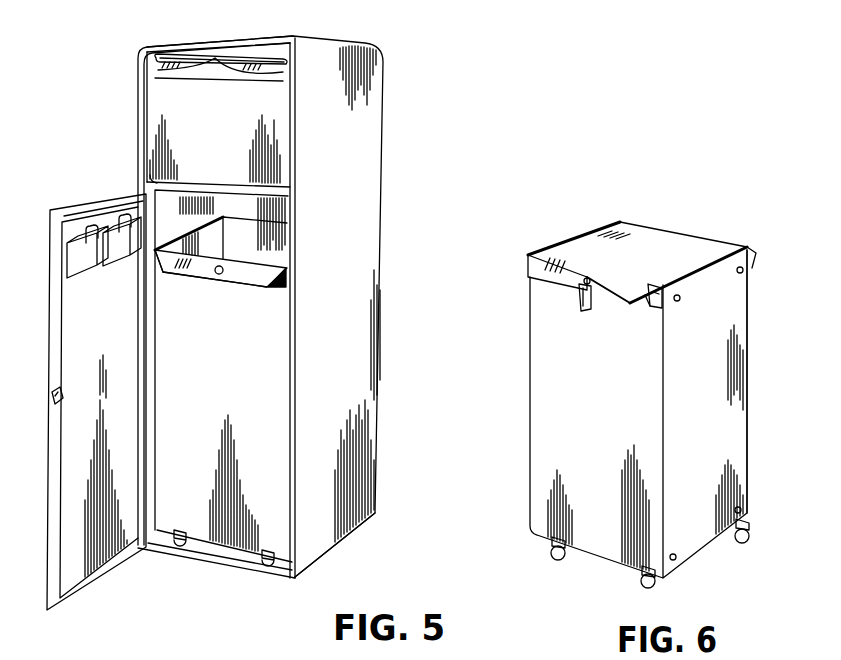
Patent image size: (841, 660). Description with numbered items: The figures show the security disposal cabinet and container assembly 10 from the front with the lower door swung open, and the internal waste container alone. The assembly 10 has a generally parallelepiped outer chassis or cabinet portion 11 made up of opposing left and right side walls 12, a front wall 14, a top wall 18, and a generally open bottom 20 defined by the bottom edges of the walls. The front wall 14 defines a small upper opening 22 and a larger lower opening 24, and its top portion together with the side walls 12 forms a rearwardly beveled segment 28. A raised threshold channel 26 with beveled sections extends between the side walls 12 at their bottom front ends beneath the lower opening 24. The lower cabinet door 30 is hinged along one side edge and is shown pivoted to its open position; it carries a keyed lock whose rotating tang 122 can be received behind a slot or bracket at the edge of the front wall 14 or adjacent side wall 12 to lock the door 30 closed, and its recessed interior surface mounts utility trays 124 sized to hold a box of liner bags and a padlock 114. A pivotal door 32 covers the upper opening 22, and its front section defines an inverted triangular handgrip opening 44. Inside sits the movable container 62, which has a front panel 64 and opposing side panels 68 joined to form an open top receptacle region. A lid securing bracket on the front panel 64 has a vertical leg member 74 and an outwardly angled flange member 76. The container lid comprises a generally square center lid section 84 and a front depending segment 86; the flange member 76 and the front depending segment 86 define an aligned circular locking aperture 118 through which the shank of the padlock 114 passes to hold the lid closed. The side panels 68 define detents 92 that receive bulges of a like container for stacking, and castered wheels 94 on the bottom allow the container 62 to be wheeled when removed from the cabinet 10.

In FIG. 5, the security disposal cabinet and container assembly 10 is at (251, 315).
In FIG. 5, the outer chassis or cabinet portion 11 is at (389, 278).
In FIG. 5, the side walls 12 is at (368, 224).
In FIG. 5, the front wall 14 is at (148, 180).
In FIG. 5, the top wall 18 is at (290, 40).
In FIG. 5, the open bottom 20 is at (358, 538).
In FIG. 5, the upper opening 22 is at (143, 104).
In FIG. 5, the lower opening 24 is at (283, 362).
In FIG. 5, the raised threshold channel 26 is at (215, 568).
In FIG. 5, the rearwardly beveled segment 28 is at (143, 56).
In FIG. 5, the lower cabinet door 30 is at (73, 388).
In FIG. 5, the pivotal door 32 is at (218, 115).
In FIG. 5, the handgrip opening 44 is at (200, 60).
In FIG. 5, the movable container 62 is at (183, 244).
In FIG. 6, the movable container 62 is at (623, 259).
In FIG. 5, the front panel 64 is at (197, 416).
In FIG. 6, the front panel 64 is at (640, 431).
In FIG. 6, the side panels 68 is at (736, 392).
In FIG. 5, the vertical leg member 74 is at (160, 270).
In FIG. 6, the vertical leg member 74 is at (655, 312).
In FIG. 5, the angled flange member 76 is at (205, 278).
In FIG. 6, the angled flange member 76 is at (648, 306).
In FIG. 6, the center lid section 84 is at (652, 238).
In FIG. 6, the front depending segment 86 is at (533, 268).
In FIG. 6, the detents 92 is at (680, 299).
In FIG. 5, the castered wheels 94 is at (180, 546).
In FIG. 6, the castered wheels 94 is at (573, 561).
In FIG. 6, the padlock 114 is at (587, 312).
In FIG. 5, the circular locking aperture 118 is at (223, 276).
In FIG. 6, the circular locking aperture 118 is at (584, 276).
In FIG. 5, the rotating tang 122 is at (56, 398).
In FIG. 5, the utility trays 124 is at (112, 222).